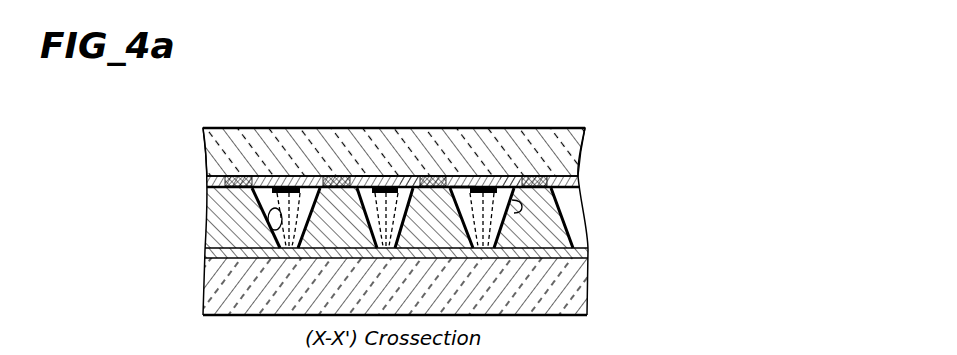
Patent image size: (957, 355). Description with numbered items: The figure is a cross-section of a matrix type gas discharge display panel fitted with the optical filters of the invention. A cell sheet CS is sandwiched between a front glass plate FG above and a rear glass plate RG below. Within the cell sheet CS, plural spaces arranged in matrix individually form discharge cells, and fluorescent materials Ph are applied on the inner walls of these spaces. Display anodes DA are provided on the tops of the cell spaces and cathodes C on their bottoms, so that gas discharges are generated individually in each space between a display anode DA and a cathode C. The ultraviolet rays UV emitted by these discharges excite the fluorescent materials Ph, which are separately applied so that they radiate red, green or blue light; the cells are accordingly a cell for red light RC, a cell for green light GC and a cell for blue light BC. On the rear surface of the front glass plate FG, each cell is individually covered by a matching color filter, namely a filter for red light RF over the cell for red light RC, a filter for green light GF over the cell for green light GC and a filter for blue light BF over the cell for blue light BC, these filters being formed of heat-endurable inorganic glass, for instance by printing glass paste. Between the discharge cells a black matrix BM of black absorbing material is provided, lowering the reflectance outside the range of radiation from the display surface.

The front glass plate FG is at (213, 158).
The rear glass plate RG is at (210, 283).
The black matrix BM is at (235, 174).
The cell for red light RC is at (268, 186).
The filter for red light RF is at (321, 185).
The cell for green light GC is at (373, 176).
The filter for green light GF is at (415, 177).
The cell for blue light BC is at (463, 186).
The filter for blue light BF is at (510, 177).
The display anode DA is at (291, 186).
The cell sheet CS is at (230, 230).
The cathode C is at (580, 253).
The ultraviolet ray UV is at (288, 258).
The fluorescent material Ph is at (266, 230).